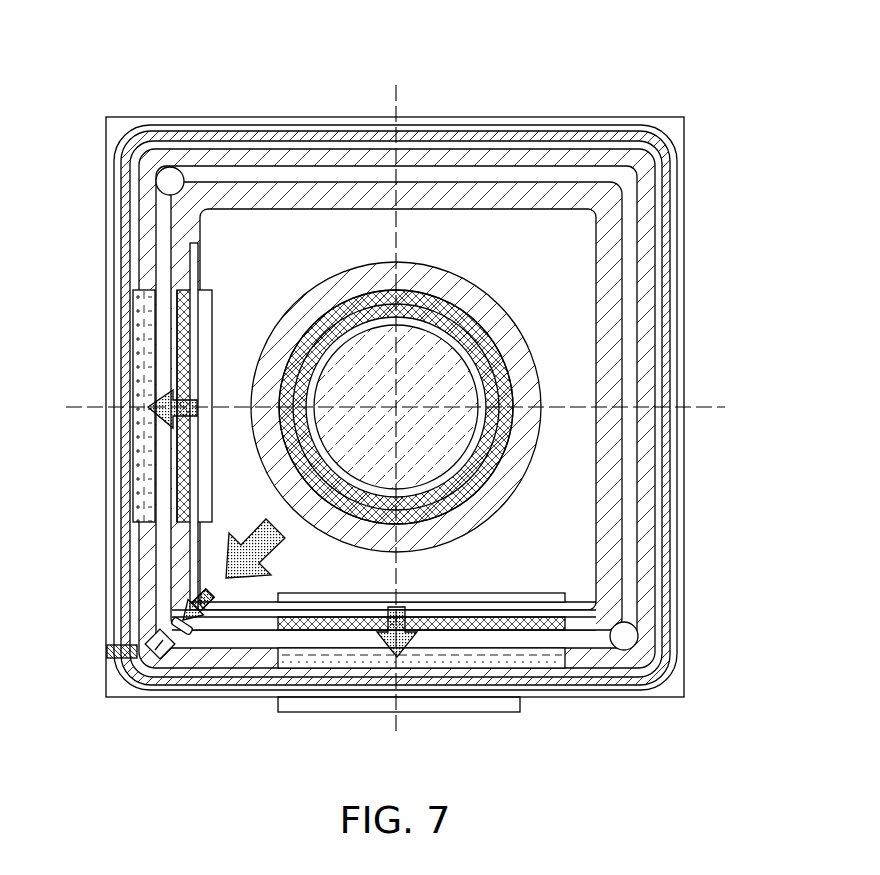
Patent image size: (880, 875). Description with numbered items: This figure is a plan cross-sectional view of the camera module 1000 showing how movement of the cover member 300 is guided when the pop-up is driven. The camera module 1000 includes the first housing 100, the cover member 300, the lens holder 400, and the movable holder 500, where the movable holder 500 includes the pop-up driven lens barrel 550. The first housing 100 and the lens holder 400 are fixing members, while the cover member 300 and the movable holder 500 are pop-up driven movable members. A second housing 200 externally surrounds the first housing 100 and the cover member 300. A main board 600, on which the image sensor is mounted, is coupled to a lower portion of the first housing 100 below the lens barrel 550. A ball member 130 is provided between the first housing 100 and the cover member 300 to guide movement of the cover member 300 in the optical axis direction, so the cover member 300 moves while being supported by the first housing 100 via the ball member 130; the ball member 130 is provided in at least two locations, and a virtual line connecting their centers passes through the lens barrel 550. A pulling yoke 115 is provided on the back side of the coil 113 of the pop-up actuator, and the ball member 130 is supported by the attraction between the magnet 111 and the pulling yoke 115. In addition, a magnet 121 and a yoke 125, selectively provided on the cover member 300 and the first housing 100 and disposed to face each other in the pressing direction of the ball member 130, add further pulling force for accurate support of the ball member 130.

The camera module 1000 is at (166, 34).
The first housing 100 is at (435, 185).
The second housing 200 is at (510, 136).
The cover member 300 is at (580, 160).
The lens holder 400 is at (505, 347).
The movable holder 500 is at (500, 381).
The lens barrel 550 is at (455, 436).
The magnet 111 is at (148, 338).
The coil 113 is at (177, 378).
The pulling yoke 115 is at (205, 440).
The magnet 121 is at (112, 655).
The yoke 125 is at (180, 626).
The ball member 130 is at (165, 183).
The main board 600 is at (505, 708).